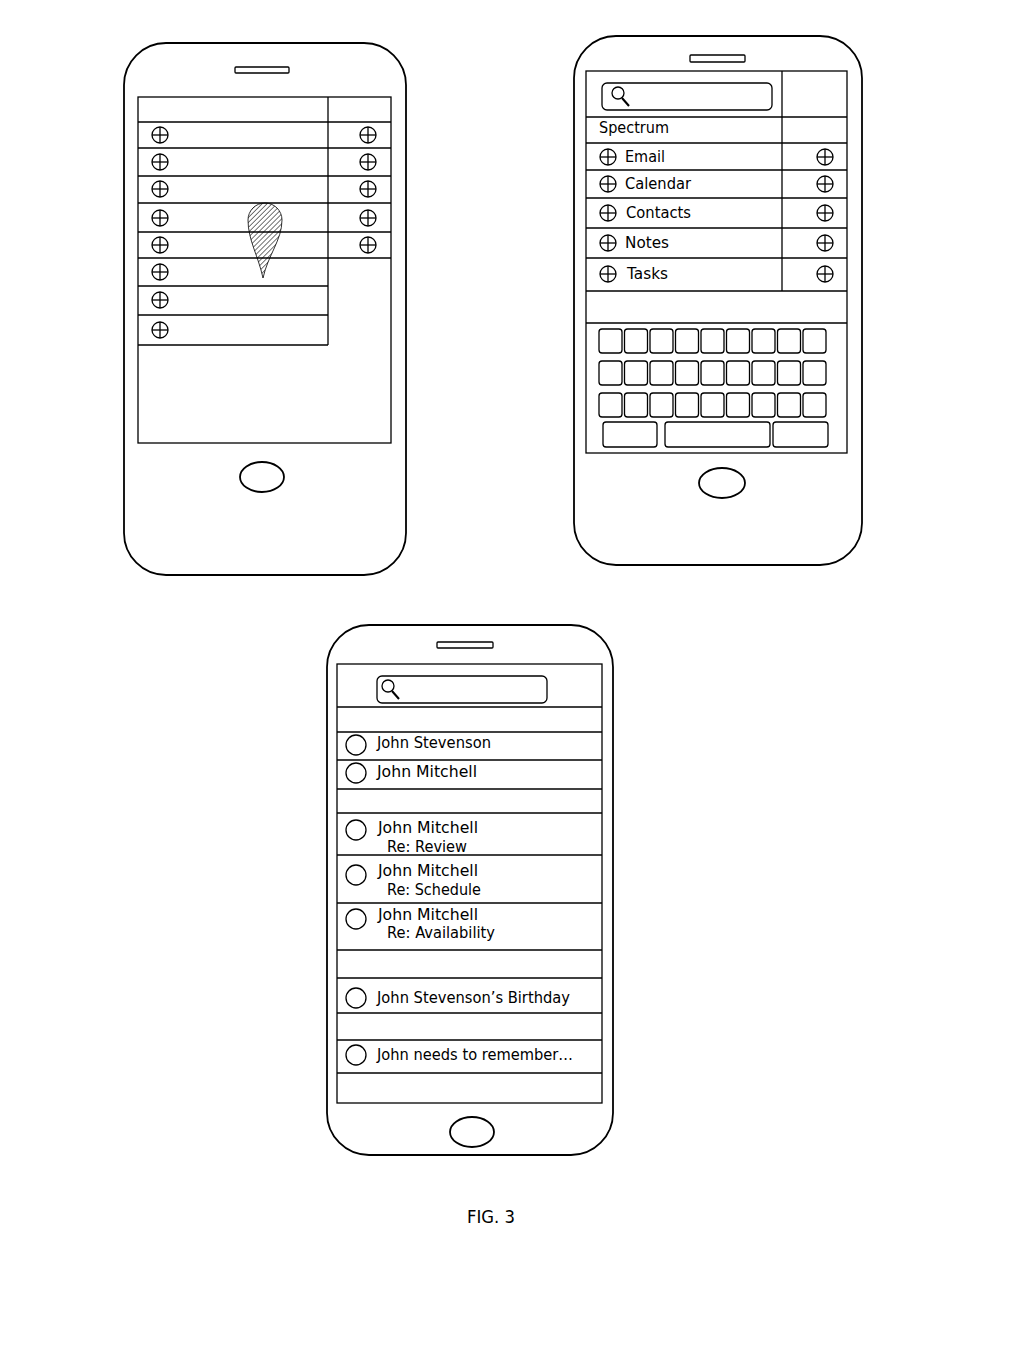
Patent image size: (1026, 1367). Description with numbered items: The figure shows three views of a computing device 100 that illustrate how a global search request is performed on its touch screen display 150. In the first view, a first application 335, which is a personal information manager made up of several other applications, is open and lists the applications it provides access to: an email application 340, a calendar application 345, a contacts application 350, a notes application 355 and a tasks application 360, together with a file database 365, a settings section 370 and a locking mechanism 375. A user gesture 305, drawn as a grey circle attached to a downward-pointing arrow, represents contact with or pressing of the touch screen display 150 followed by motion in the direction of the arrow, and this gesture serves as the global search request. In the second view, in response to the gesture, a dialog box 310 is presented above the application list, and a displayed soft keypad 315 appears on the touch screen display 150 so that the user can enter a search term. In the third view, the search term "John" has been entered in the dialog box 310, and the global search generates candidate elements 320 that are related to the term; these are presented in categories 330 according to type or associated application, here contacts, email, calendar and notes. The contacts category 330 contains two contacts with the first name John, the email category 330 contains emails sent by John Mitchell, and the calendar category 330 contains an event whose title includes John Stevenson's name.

The computing device 100 is at (200, 43).
The touch screen display 150 is at (397, 165).
The user gesture 305 is at (268, 245).
The dialog box 310 is at (615, 108).
The keypad 315 is at (817, 378).
The candidate elements 320 is at (373, 745).
The categories 330 is at (582, 715).
The first application 335 is at (150, 107).
The email application 340 is at (152, 135).
The calendar application 345 is at (152, 162).
The contacts application 350 is at (152, 189).
The notes application 355 is at (152, 219).
The tasks application 360 is at (152, 247).
The file database 365 is at (152, 276).
The settings section 370 is at (152, 300).
The locking mechanism 375 is at (152, 330).